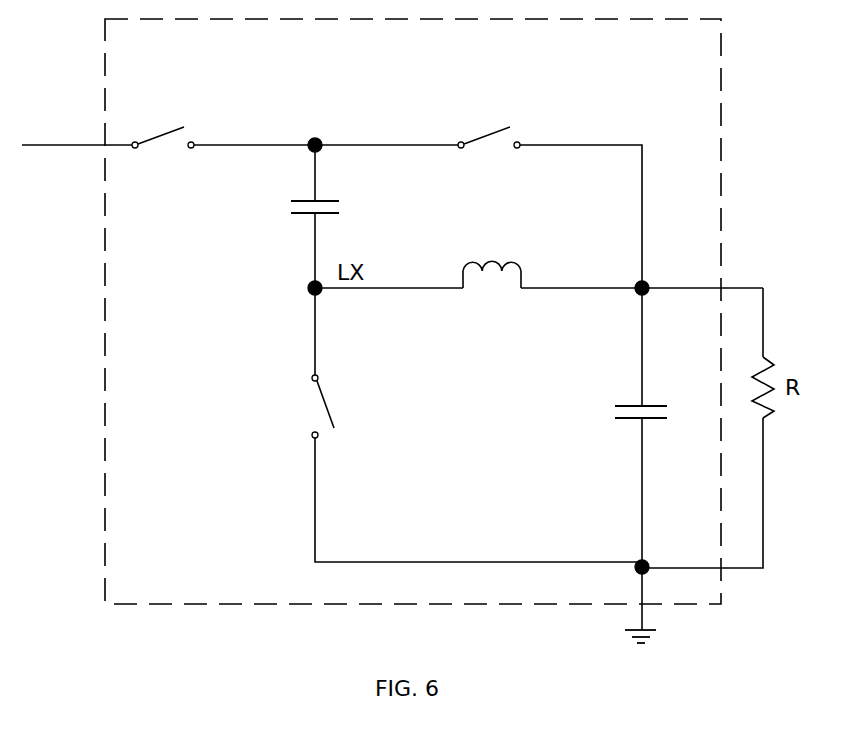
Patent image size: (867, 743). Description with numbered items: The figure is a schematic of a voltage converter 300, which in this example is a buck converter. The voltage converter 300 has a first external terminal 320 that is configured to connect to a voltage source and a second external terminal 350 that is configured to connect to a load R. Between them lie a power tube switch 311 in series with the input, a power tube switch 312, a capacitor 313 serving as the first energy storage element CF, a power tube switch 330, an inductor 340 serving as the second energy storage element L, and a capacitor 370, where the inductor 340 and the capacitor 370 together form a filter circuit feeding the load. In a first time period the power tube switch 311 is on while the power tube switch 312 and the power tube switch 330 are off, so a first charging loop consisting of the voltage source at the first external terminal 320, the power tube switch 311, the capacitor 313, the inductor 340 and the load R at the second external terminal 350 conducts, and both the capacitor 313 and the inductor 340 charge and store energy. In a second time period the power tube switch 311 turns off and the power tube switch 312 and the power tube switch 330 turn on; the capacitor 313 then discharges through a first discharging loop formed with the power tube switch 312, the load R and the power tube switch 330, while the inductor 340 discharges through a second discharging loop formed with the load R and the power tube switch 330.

The voltage converter 300 is at (460, 52).
The power tube switch 311 is at (148, 120).
The power tube switch 312 is at (488, 103).
The capacitor 313 is at (345, 196).
The first external terminal 320 is at (100, 136).
The power tube switch 330 is at (345, 390).
The inductor 340 is at (488, 248).
The second external terminal 350 is at (727, 284).
The capacitor 370 is at (657, 396).